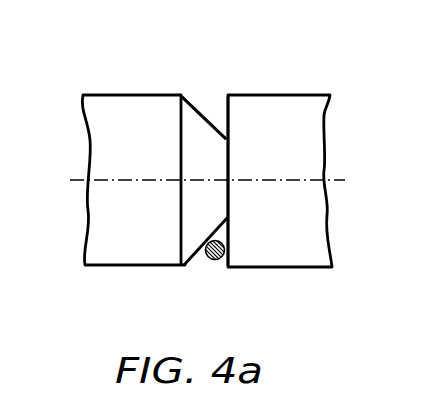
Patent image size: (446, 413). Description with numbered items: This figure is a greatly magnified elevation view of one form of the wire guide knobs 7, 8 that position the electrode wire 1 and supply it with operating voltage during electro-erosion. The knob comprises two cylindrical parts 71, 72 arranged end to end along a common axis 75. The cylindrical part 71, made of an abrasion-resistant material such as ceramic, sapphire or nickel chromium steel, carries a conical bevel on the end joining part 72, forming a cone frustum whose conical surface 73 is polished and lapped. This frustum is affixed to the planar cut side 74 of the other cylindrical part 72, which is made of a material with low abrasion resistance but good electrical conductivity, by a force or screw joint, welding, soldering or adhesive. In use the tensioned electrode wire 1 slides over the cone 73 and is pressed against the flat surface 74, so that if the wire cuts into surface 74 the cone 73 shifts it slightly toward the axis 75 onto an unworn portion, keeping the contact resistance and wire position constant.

The electrode wire 1 is at (207, 263).
The wire guide knob 7 is at (205, 140).
The wire guide knob 8 is at (230, 43).
The cylindrical part 71 is at (125, 104).
The cylindrical part 72 is at (292, 103).
The conical surface 73 is at (190, 112).
The planar cut side 74 is at (224, 110).
The axis 75 is at (72, 181).